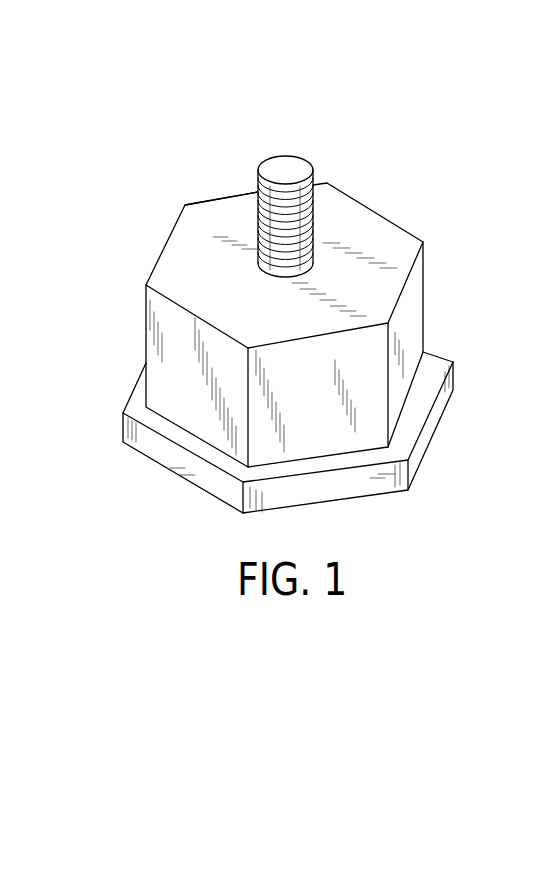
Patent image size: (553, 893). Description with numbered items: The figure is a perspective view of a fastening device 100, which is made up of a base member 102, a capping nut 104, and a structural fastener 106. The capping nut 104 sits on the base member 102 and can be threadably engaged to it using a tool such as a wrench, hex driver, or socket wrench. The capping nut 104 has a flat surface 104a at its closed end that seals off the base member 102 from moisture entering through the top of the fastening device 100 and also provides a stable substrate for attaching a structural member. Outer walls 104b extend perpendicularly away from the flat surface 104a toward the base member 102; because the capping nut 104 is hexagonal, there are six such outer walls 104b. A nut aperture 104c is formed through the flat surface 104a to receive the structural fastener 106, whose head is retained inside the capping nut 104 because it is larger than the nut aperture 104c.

The fastening device 100 is at (161, 128).
The base member 102 is at (156, 491).
The capping nut 104 is at (112, 324).
The flat surface 104a is at (388, 240).
The outer walls 104b is at (418, 302).
The nut aperture 104c is at (258, 258).
The structural fastener 106 is at (293, 156).